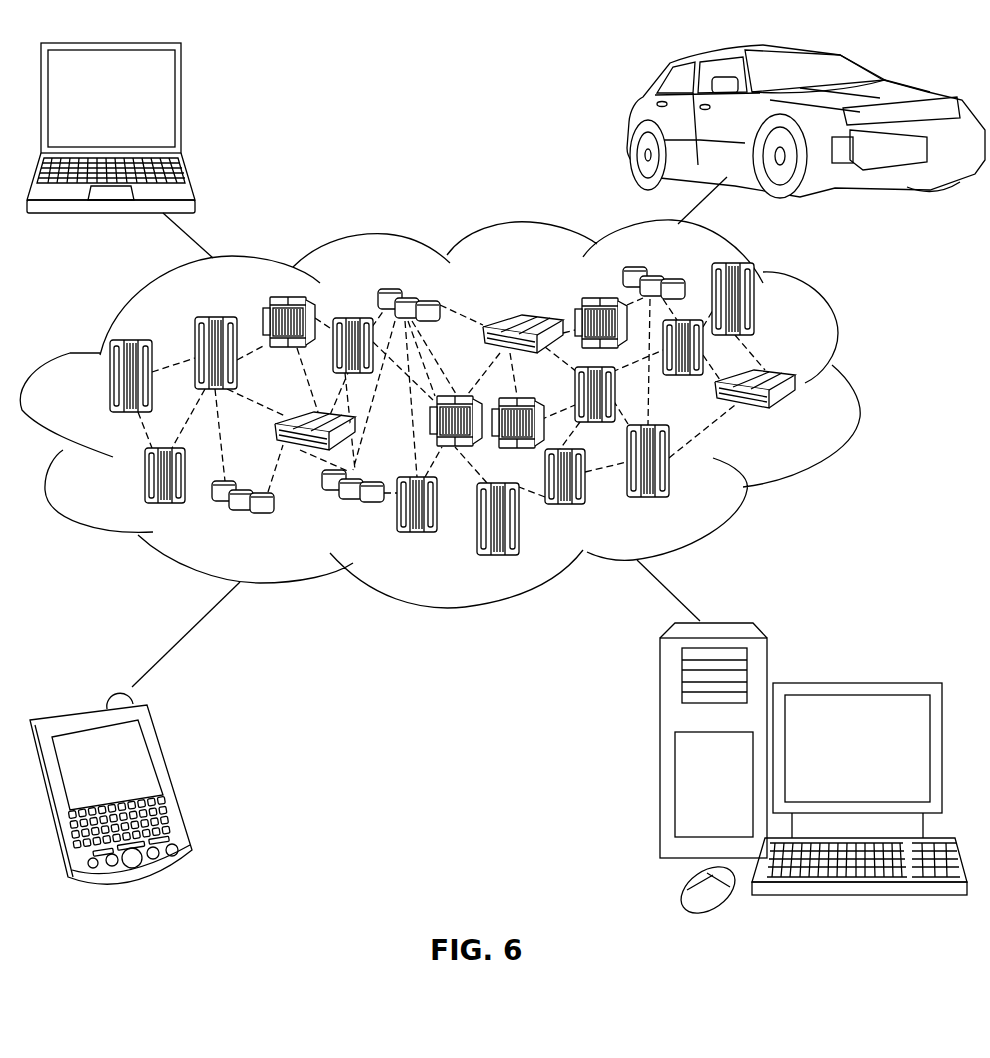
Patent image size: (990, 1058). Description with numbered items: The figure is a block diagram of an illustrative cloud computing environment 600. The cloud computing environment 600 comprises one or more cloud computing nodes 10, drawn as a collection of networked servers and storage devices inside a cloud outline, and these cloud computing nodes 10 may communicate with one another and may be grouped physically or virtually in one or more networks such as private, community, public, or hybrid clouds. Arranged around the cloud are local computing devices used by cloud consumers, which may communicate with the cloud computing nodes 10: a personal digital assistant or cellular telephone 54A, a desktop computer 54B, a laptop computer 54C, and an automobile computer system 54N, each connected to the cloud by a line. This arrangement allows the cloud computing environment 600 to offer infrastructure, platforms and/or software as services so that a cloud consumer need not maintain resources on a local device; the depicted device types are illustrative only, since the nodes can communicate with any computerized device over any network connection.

The cloud computing environment 600 is at (853, 386).
The cloud computing nodes 10 is at (797, 418).
The personal digital assistant (PDA) or cellular telephone 54A is at (170, 780).
The desktop computer 54B is at (856, 683).
The laptop computer 54C is at (182, 108).
The automobile computer system 54N is at (630, 121).